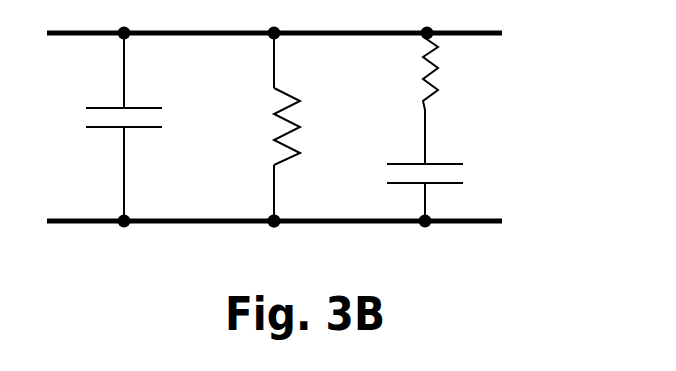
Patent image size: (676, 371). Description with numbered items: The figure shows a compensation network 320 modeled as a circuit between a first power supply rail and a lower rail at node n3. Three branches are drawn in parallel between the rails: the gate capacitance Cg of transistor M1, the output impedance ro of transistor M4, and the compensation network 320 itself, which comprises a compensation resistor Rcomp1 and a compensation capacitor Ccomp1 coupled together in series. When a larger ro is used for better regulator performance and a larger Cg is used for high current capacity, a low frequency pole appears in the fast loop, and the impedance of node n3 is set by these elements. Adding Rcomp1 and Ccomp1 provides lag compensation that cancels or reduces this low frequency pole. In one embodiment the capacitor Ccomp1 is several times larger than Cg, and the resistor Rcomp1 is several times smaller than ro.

The compensation network 320 is at (633, 50).
The gate capacitance Cg is at (104, 127).
The output impedance ro is at (269, 127).
The node n3 is at (284, 234).
The compensation resistor Rcomp1 is at (474, 98).
The compensation capacitor Ccomp1 is at (473, 187).